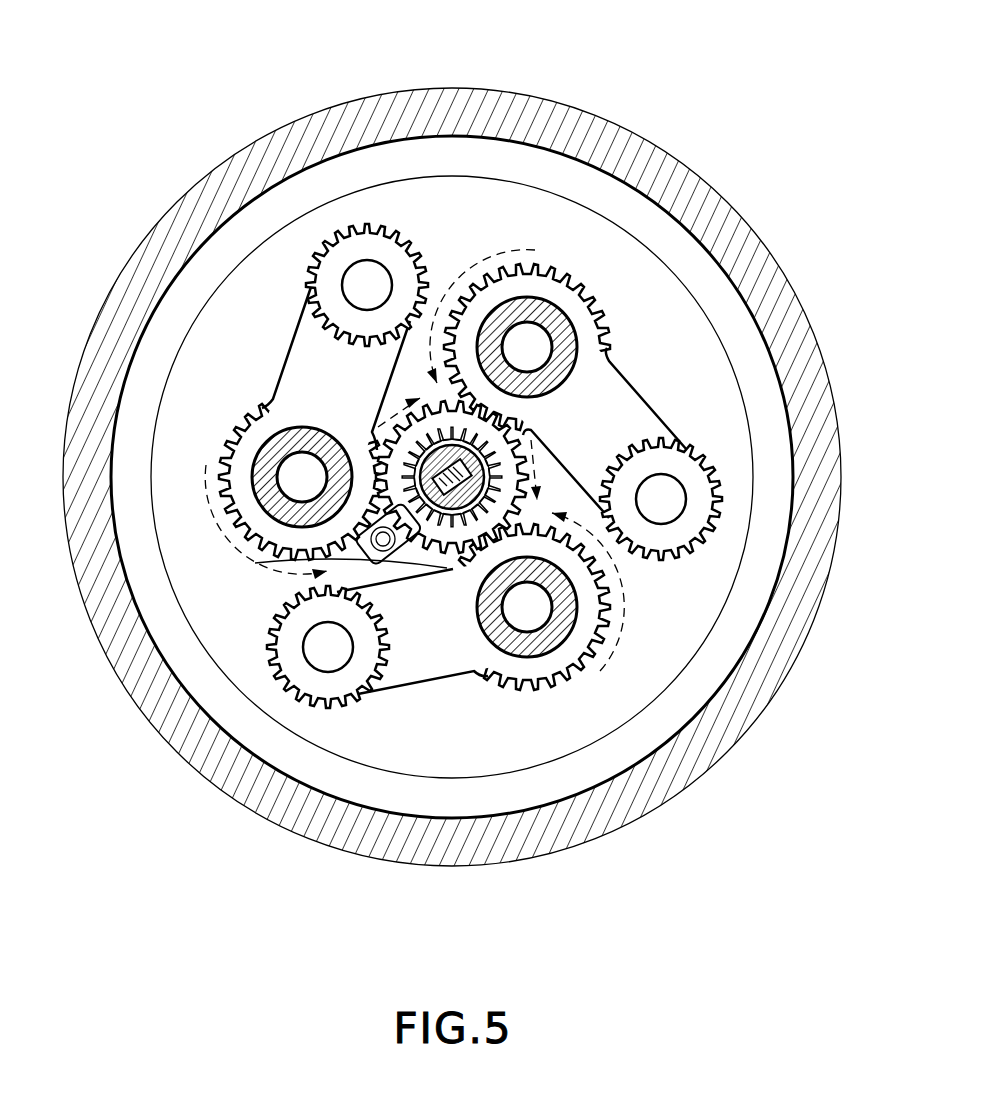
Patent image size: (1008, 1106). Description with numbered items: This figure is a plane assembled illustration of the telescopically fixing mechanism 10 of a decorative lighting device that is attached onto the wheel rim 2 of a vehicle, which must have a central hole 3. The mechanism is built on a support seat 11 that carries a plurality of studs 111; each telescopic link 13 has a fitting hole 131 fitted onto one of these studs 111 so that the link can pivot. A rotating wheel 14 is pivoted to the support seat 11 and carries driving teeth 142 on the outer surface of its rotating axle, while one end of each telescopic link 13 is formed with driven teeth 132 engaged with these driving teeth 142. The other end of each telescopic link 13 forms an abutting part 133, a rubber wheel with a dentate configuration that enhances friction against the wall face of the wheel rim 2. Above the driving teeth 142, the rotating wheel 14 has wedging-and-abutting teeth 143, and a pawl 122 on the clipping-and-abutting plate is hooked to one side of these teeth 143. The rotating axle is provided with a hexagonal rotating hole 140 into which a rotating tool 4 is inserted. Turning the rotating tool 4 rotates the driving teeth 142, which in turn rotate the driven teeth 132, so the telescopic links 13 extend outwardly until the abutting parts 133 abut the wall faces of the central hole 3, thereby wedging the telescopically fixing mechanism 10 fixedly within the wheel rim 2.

The wheel rim 2 is at (583, 128).
The central hole 3 is at (612, 200).
The rotating tool 4 is at (455, 433).
The telescopically fixing mechanism 10 is at (450, 578).
The support seat 11 is at (413, 383).
The telescopic link 13 is at (412, 688).
The rotating wheel 14 is at (507, 445).
The stud 111 is at (558, 622).
The pawl 122 is at (360, 446).
The fitting hole 131 is at (513, 657).
The driven teeth 132 is at (608, 582).
The abutting part 133 is at (268, 632).
The rotating hole 140 is at (535, 470).
The driving teeth 142 is at (452, 547).
The wedging-and-abutting teeth 143 is at (428, 548).